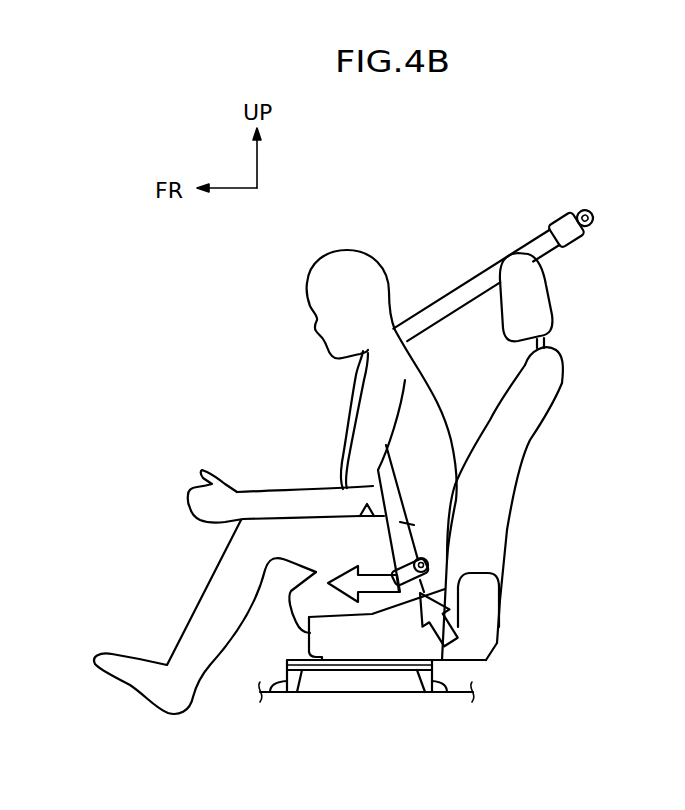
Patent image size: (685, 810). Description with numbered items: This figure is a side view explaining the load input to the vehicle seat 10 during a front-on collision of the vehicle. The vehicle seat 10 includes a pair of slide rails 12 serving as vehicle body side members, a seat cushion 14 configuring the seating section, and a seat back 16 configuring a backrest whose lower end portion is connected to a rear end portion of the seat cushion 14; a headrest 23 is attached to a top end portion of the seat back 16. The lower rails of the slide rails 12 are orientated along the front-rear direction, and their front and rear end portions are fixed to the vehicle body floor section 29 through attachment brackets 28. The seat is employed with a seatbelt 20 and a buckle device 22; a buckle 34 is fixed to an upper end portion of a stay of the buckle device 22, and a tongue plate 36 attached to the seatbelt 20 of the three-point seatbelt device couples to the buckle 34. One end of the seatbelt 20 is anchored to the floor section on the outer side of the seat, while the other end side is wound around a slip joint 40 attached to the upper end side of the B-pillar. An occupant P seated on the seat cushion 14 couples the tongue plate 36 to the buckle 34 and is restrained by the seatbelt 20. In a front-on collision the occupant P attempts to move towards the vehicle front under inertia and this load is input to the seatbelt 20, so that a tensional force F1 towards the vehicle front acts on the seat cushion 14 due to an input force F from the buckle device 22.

The vehicle seat 10 is at (602, 396).
The slide rails 12 is at (350, 666).
The seat cushion 14 is at (291, 593).
The seat back 16 is at (531, 444).
The seatbelt 20 is at (437, 300).
The buckle device 22 is at (478, 600).
The headrest 23 is at (551, 300).
The attachment brackets 28 is at (271, 693).
The vehicle body floor section 29 is at (403, 692).
The buckle 34 is at (430, 570).
The tongue plate 36 is at (428, 552).
The slip joint 40 is at (563, 212).
The occupant P is at (305, 290).
The input force F is at (452, 618).
The tensional force F1 is at (373, 595).